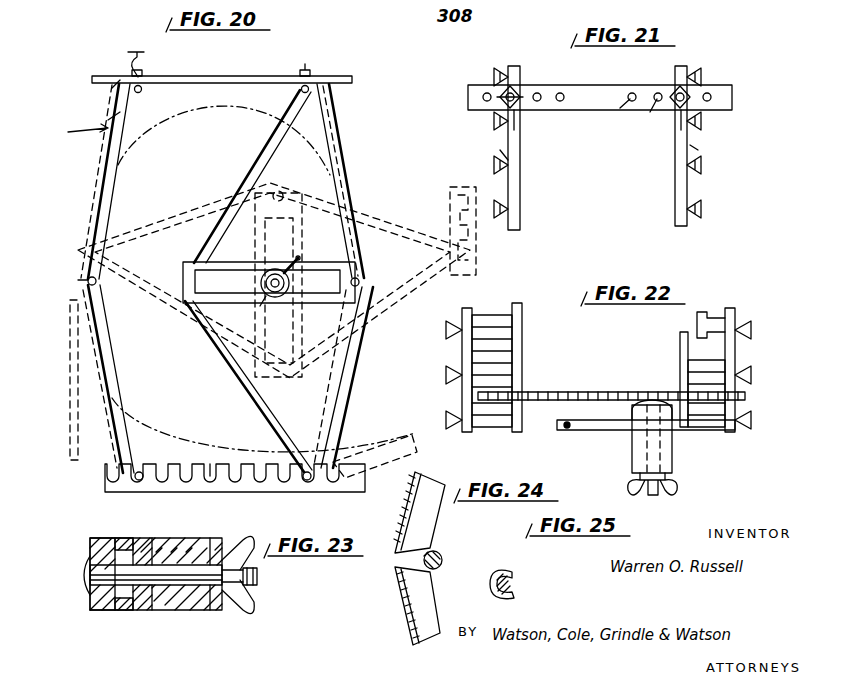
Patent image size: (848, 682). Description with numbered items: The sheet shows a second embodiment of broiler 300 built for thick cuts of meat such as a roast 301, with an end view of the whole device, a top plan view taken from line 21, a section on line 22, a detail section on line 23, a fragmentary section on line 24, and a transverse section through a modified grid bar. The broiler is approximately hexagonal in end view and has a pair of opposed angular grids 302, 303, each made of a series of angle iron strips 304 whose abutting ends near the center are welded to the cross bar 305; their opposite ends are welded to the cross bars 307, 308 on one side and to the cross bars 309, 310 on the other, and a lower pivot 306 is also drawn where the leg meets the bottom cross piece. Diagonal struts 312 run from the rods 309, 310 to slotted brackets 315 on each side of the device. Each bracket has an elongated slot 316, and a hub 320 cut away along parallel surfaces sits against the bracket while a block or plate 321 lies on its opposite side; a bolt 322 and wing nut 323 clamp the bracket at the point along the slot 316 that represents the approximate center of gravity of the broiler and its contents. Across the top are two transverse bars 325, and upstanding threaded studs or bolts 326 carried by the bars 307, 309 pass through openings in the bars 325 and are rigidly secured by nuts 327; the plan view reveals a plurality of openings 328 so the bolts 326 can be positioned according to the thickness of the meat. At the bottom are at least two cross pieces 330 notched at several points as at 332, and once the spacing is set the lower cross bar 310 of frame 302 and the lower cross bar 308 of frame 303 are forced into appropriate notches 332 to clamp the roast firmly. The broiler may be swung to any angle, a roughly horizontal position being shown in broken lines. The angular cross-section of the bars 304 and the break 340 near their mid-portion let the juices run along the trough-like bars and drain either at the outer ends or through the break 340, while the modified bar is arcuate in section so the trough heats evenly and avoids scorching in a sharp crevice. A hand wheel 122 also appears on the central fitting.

In FIG. 20, the section line 21— 21 is at (124, 57).
In FIG. 20, the section line 22— 22 is at (150, 256).
In FIG. 20, the section line 23— 23 is at (278, 256).
In FIG. 21, the section line 24— 24 is at (548, 158).
In FIG. 20, the hand wheel 122 is at (262, 283).
In FIG. 20, the broiler 300 is at (71, 141).
In FIG. 20, the roast 301 is at (115, 340).
In FIG. 20, the angular grid 302 is at (359, 173).
In FIG. 21, the angular grid 302 is at (708, 149).
In FIG. 20, the angular grid 303 is at (82, 318).
In FIG. 21, the angular grid 303 is at (499, 149).
In FIG. 20, the angle iron strip 304 is at (112, 165).
In FIG. 21, the angle iron strip 304 is at (518, 196).
In FIG. 22, the angle iron strip 304 is at (498, 308).
In FIG. 24, the angle iron strip 304 is at (408, 509).
In FIG. 25, the angle iron strip 304 is at (490, 587).
In FIG. 20, the cross bar 305 is at (96, 284).
In FIG. 22, the cross bar 305 is at (462, 345).
In FIG. 24, the cross bar 305 is at (438, 554).
In FIG. 20, the lower leg pivot 306 is at (142, 470).
In FIG. 20, the cross bar 307 is at (141, 92).
In FIG. 21, the cross bar 307 is at (520, 135).
In FIG. 20, the cross bar 308 is at (274, 279).
In FIG. 22, the cross bar 308 is at (522, 330).
In FIG. 20, the cross bar 309 is at (302, 91).
In FIG. 21, the cross bar 309 is at (678, 136).
In FIG. 20, the cross bar 310 is at (304, 468).
In FIG. 22, the cross bar 310 is at (680, 350).
In FIG. 20, the diagonal strut 312 is at (262, 149).
In FIG. 22, the diagonal strut 312 is at (566, 432).
In FIG. 22, the slotted bracket 315 is at (596, 432).
In FIG. 23, the slotted bracket 315 is at (120, 538).
In FIG. 20, the elongated slot 316 is at (210, 262).
In FIG. 22, the hub 320 is at (672, 462).
In FIG. 23, the hub 320 is at (200, 612).
In FIG. 22, the block or plate 321 is at (632, 412).
In FIG. 23, the block or plate 321 is at (100, 596).
In FIG. 22, the bolt 322 is at (660, 452).
In FIG. 23, the bolt 322 is at (150, 612).
In FIG. 20, the wing nut 323 is at (262, 300).
In FIG. 22, the wing nut 323 is at (678, 490).
In FIG. 23, the wing nut 323 is at (246, 605).
In FIG. 20, the transverse bar 325 is at (208, 73).
In FIG. 21, the transverse bar 325 is at (604, 90).
In FIG. 20, the threaded stud or bolt 326 is at (135, 55).
In FIG. 21, the threaded stud or bolt 326 is at (512, 86).
In FIG. 20, the nut 327 is at (112, 88).
In FIG. 21, the nut 327 is at (504, 94).
In FIG. 21, the opening 328 is at (630, 117).
In FIG. 20, the cross piece 330 is at (108, 478).
In FIG. 22, the cross piece 330 is at (536, 388).
In FIG. 20, the notch 332 is at (210, 462).
In FIG. 22, the notch 332 is at (590, 385).
In FIG. 20, the break 340 is at (79, 284).
In FIG. 24, the break 340 is at (424, 564).